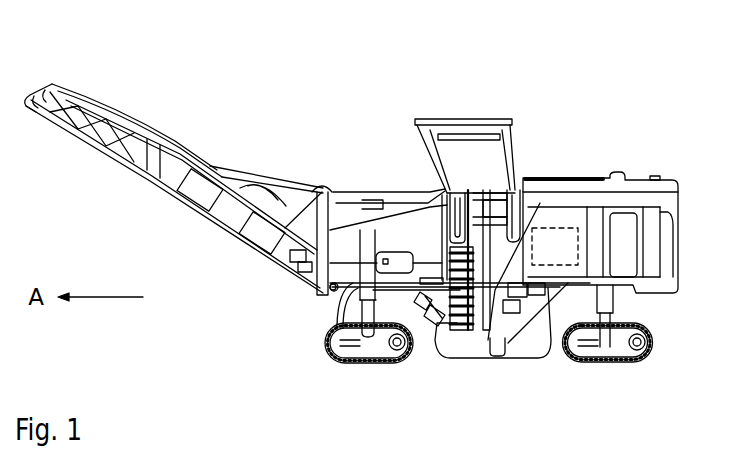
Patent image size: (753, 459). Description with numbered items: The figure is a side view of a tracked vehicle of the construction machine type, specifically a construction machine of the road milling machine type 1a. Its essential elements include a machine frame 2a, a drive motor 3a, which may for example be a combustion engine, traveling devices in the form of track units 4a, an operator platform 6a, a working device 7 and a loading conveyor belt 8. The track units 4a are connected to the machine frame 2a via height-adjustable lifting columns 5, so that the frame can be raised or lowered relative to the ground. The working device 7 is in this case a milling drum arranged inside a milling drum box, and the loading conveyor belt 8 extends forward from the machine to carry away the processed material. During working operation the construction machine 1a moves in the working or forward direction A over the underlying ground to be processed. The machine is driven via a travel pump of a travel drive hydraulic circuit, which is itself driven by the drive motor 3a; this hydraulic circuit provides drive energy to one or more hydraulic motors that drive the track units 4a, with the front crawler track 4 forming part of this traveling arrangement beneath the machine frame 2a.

The construction machine 1a is at (592, 84).
The machine frame 2a is at (343, 267).
The drive motor 3a is at (557, 228).
The front crawler track 4 is at (347, 350).
The track units 4a is at (623, 353).
The lifting columns 5 is at (407, 352).
The operator platform 6a is at (468, 155).
The working device 7 is at (522, 342).
The loading conveyor belt 8 is at (127, 112).